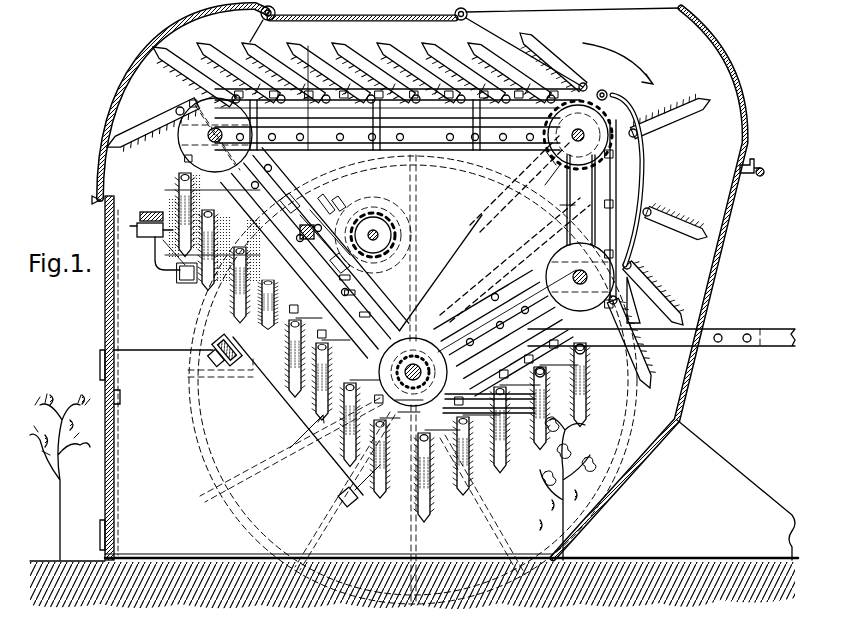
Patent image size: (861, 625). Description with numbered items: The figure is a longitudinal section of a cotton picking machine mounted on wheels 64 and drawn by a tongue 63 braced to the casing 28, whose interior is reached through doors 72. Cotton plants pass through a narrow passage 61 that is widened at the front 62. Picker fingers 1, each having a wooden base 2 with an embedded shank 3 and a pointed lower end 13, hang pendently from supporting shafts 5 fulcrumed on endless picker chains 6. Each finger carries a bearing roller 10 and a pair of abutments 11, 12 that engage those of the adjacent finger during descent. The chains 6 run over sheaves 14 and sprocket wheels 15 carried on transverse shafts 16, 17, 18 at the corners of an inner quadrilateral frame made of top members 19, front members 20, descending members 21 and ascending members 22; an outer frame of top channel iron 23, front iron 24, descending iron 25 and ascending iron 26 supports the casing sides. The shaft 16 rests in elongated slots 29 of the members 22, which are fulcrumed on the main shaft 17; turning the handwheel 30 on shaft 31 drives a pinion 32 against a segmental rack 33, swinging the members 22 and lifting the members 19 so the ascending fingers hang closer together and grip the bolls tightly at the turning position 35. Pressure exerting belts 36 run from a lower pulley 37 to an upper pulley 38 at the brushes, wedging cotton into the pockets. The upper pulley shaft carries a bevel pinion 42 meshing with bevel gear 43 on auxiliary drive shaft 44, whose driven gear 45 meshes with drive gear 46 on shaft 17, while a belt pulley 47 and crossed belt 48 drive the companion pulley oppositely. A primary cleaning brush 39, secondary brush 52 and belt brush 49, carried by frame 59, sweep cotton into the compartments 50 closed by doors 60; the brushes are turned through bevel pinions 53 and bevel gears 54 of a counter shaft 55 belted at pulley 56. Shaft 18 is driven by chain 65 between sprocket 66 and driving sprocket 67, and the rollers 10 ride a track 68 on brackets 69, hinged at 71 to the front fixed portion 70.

The picker fingers 1 is at (383, 215).
The wooden base 2 is at (263, 430).
The shank 3 is at (489, 386).
The supporting shaft 5 is at (330, 328).
The picker chains 6 is at (465, 372).
The bearing roller 10 is at (330, 351).
The abutment 11 is at (565, 375).
The abutment 12 is at (565, 386).
The pointed lower end 13 is at (590, 434).
The sheaves 14 is at (200, 142).
The sprocket wheels 15 is at (565, 165).
The transverse supporting shaft 16 is at (200, 135).
The main supporting shaft 17 is at (388, 410).
The sprocket shaft 18 is at (555, 155).
The top members 19 is at (438, 142).
The front members 20 is at (557, 201).
The descending members 21 is at (506, 297).
The ascending members 22 is at (385, 300).
The top channel iron 23 is at (470, 148).
The front iron 24 is at (600, 176).
The descending iron 25 is at (512, 292).
The ascending iron 26 is at (410, 290).
The casing 28 is at (380, 18).
The elongated slots 29 is at (180, 105).
The handwheel 30 is at (396, 215).
The transverse shaft 31 is at (396, 225).
The pinion 32 is at (396, 232).
The segmental rack 33 is at (378, 210).
The turning position 35 is at (405, 480).
The pressure exerting belts 36 is at (298, 416).
The lower pulley 37 is at (359, 497).
The upper pulley 38 is at (222, 378).
The primary cleaning brush 39 is at (222, 290).
The bevel pinion 42 is at (350, 280).
The bevel gear 43 is at (355, 295).
The auxiliary drive shaft 44 is at (370, 318).
The driven gear 45 is at (410, 302).
The drive gear 46 is at (385, 400).
The belt pulley 47 is at (222, 345).
The crossed belt 48 is at (216, 356).
The belt cleaning brush 49 is at (302, 312).
The cotton compartments 50 is at (140, 358).
The secondary cleaning brush 52 is at (178, 185).
The bevel pinion 53 is at (322, 200).
The bevel gears 54 is at (336, 200).
The counter shaft 55 is at (325, 215).
The pulley 56 is at (397, 102).
The frame 59 is at (172, 262).
The doors 60 is at (63, 477).
The passage 61 is at (577, 488).
The widened front 62 is at (412, 552).
The tongue 63 is at (766, 330).
The wheels 64 is at (618, 535).
The chain 65 is at (500, 190).
The sprocket 66 is at (540, 150).
The driving sprocket 67 is at (440, 330).
The track 68 is at (200, 100).
The brackets 69 is at (387, 109).
The front fixed portion 70 is at (637, 190).
The hinge 71 is at (618, 88).
The doors 72 is at (110, 92).